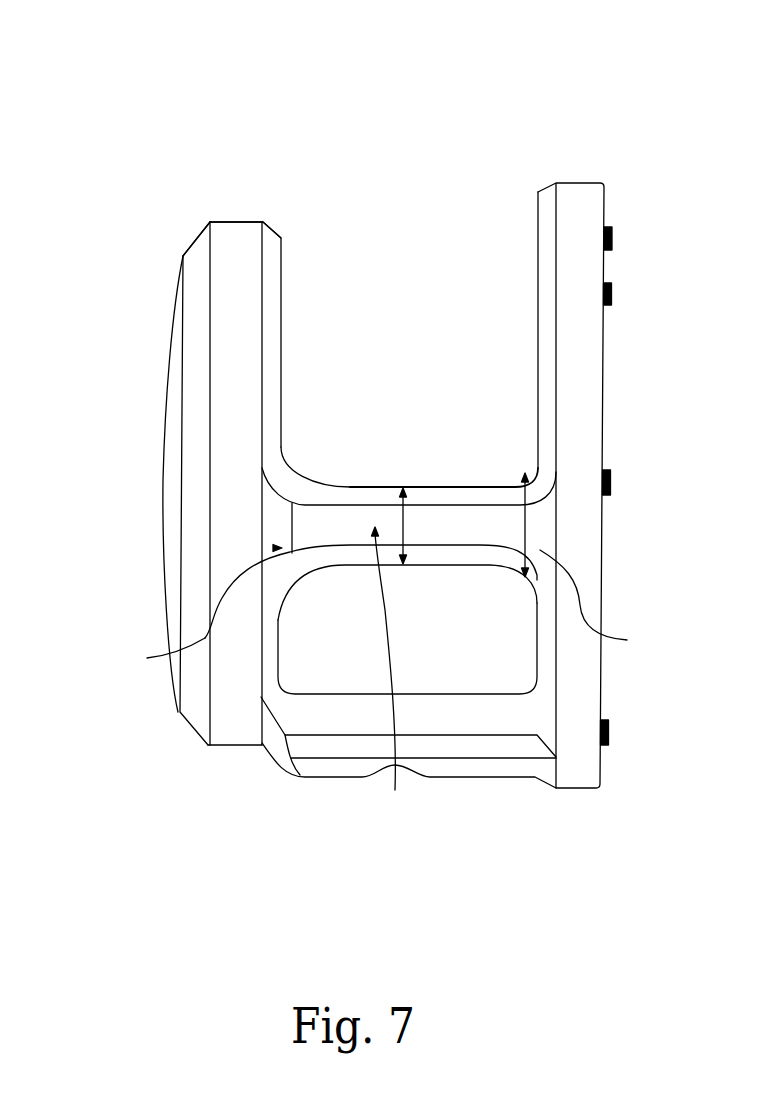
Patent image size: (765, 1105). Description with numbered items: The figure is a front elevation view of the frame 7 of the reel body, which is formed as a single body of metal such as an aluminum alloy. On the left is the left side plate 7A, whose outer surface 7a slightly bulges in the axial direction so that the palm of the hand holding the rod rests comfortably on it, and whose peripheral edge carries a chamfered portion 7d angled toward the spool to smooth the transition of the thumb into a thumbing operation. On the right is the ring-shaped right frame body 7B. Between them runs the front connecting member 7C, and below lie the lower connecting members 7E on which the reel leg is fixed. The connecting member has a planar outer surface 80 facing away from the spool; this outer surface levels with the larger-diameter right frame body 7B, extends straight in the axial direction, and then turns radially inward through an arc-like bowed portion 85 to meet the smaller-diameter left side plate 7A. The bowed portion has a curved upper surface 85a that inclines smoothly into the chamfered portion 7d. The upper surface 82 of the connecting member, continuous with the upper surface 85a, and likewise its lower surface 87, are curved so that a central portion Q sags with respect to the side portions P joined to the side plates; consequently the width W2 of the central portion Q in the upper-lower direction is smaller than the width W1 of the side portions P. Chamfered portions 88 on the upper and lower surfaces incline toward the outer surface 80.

The frame 7 is at (418, 118).
The left side plate 7A is at (231, 257).
The right frame body 7B is at (578, 215).
The front connecting member 7C is at (462, 499).
The lower connecting members 7E is at (452, 722).
The outer surface 7a is at (178, 452).
The chamfered portion 7d is at (233, 310).
The outer surface 80 is at (472, 530).
The upper surface 82 is at (423, 487).
The bowed portion 85 is at (282, 512).
The upper surface 85a is at (283, 460).
The lower surface 87 is at (391, 566).
The chamfered portion 88 is at (350, 497).
The side portions P is at (384, 612).
The central portion Q is at (386, 674).
The width of the side portions W1 is at (548, 525).
The width of the central portion W2 is at (424, 526).